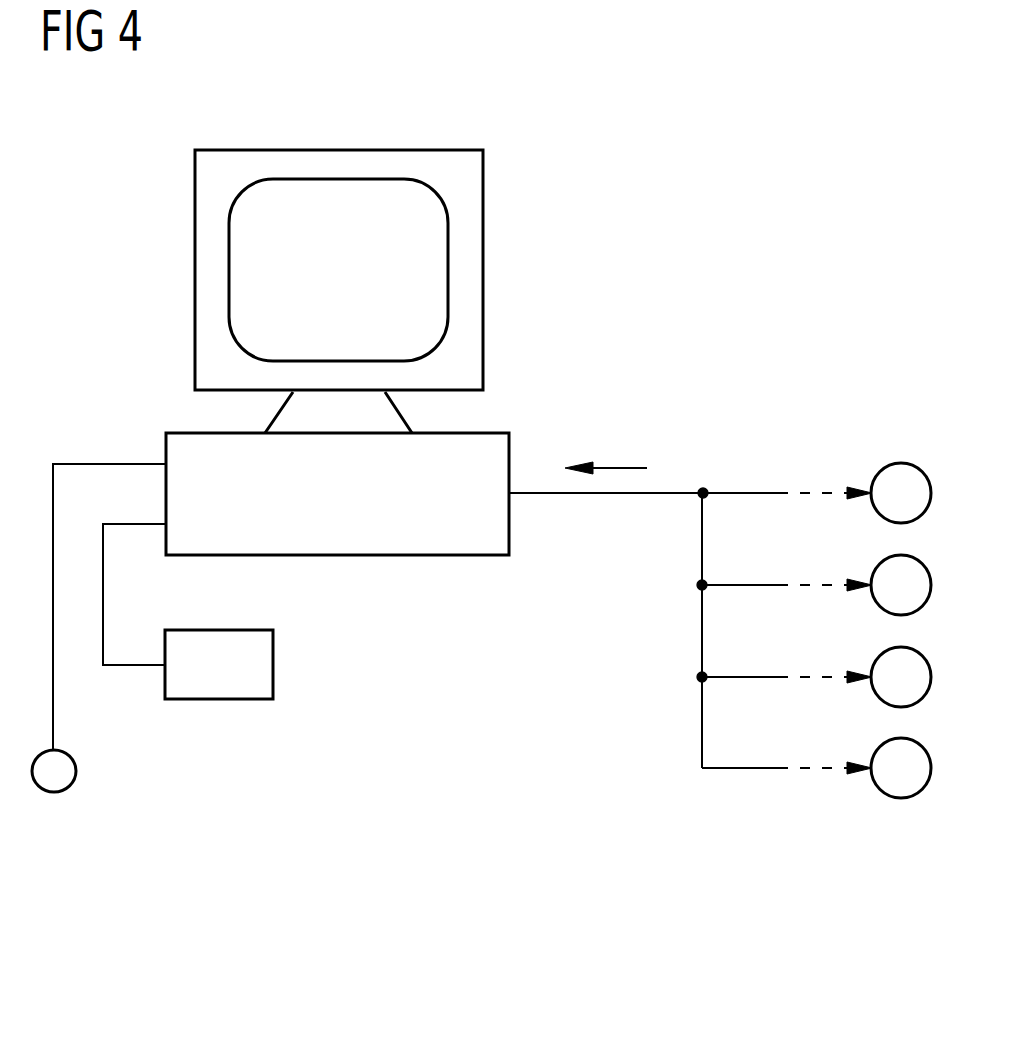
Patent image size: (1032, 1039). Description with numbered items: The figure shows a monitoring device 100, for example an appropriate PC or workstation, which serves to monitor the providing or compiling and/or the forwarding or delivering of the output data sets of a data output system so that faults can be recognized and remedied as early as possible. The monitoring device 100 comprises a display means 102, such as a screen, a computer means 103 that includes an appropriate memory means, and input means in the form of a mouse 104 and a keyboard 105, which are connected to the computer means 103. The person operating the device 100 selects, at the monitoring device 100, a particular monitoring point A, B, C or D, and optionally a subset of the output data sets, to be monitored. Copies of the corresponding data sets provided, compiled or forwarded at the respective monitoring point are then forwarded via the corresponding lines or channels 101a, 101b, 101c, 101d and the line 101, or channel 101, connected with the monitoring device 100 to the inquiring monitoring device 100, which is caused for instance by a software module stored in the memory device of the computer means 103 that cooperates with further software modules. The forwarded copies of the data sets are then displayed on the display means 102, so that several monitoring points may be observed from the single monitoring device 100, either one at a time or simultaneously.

The monitoring device 100 is at (104, 192).
The line 101 is at (610, 494).
The line 101a is at (738, 493).
The line 101b is at (738, 585).
The line 101c is at (738, 677).
The line 101d is at (738, 768).
The display means 102 is at (484, 269).
The computer means 103 is at (338, 556).
The mouse 104 is at (53, 793).
The keyboard 105 is at (218, 700).